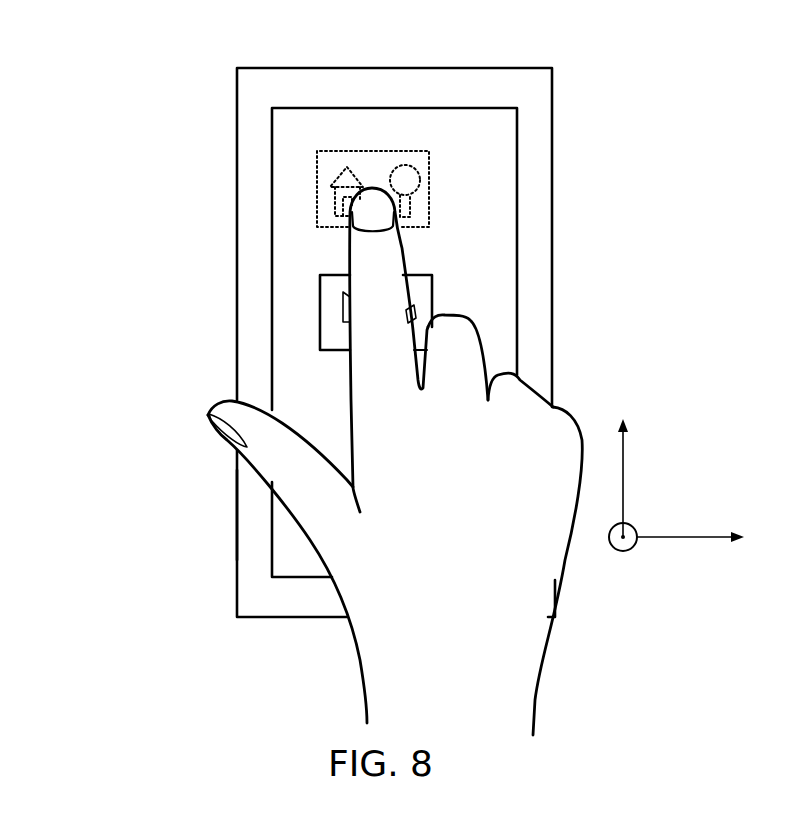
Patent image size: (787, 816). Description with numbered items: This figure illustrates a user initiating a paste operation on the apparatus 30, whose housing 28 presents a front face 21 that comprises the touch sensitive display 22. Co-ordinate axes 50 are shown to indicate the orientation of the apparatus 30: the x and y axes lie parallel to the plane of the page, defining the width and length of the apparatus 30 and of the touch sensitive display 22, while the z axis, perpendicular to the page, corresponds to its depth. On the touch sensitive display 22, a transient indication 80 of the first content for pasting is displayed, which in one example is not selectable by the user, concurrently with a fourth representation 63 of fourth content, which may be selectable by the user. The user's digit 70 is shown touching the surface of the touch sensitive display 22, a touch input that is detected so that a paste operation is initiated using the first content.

The front face 21 is at (529, 141).
The touch sensitive display 22 is at (372, 107).
The housing 28 is at (238, 507).
The apparatus 30 is at (212, 576).
The co-ordinate axes 50 is at (692, 562).
The fourth representation 63 is at (318, 317).
The user's digit 70 is at (373, 188).
The transient indication 80 is at (415, 228).